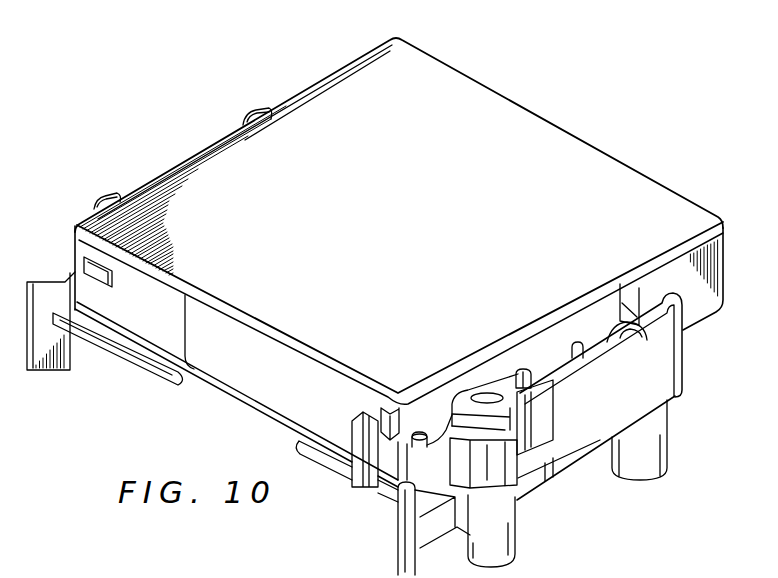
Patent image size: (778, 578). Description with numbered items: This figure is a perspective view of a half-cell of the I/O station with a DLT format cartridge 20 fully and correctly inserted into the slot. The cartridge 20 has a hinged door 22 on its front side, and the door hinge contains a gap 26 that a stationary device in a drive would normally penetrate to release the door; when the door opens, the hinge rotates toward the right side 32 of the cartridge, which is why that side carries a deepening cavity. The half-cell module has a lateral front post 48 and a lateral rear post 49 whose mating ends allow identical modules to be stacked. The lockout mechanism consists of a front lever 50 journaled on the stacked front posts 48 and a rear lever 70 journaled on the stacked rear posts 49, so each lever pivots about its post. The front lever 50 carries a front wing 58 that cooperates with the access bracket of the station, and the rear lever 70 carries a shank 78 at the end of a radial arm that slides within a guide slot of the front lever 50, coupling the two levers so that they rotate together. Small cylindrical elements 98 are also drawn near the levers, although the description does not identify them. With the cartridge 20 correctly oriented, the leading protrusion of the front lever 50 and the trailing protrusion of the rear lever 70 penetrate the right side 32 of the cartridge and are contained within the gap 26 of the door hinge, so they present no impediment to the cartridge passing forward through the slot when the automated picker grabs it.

The DLT format cartridge 20 is at (565, 118).
The hinged door 22 is at (240, 388).
The gap 26 is at (381, 398).
The right side 32 is at (705, 312).
The front post 48 is at (515, 541).
The rear post 49 is at (667, 452).
The front lever 50 is at (348, 424).
The front wing 58 is at (360, 488).
The rear lever 70 is at (688, 366).
The shank 78 is at (447, 428).
The roller pin 98 is at (416, 432).